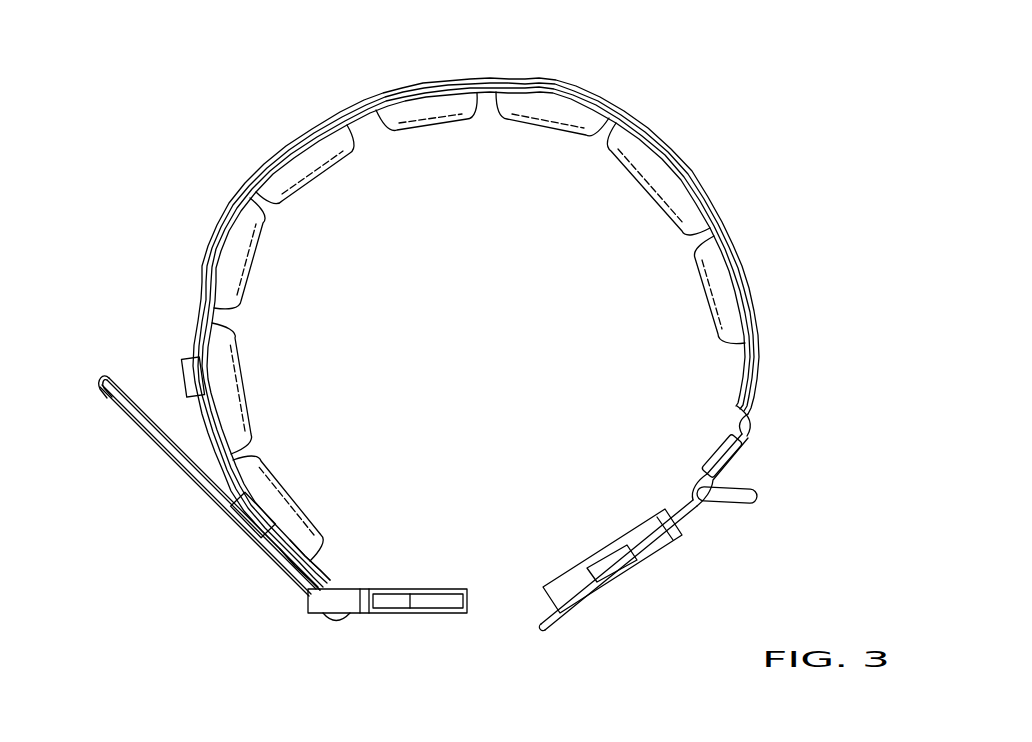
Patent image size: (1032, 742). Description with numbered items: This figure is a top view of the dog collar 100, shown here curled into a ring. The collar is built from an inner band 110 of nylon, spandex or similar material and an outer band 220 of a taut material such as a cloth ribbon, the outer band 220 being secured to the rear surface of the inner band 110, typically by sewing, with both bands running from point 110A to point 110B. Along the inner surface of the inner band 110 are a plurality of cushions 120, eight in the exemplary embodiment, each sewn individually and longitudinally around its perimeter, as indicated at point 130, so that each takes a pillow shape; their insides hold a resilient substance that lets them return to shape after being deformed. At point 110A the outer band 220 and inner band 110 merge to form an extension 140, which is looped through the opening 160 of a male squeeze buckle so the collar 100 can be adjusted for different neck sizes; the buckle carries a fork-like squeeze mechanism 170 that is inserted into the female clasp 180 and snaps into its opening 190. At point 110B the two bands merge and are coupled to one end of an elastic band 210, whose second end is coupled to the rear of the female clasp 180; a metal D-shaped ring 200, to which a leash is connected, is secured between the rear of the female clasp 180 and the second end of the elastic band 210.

The dog collar 100 is at (204, 180).
The inner band 110 is at (478, 88).
The point 110A is at (340, 574).
The point 110B is at (700, 440).
The cushions 120 is at (607, 111).
The sewing point 130 is at (362, 119).
The extension 140 is at (153, 437).
The opening 160 is at (342, 616).
The fork-like squeeze mechanism 170 is at (420, 615).
The female clasp 180 is at (583, 590).
The opening 190 is at (612, 567).
The ring 200 is at (748, 505).
The elastic band 210 is at (753, 423).
The outer band 220 is at (562, 84).